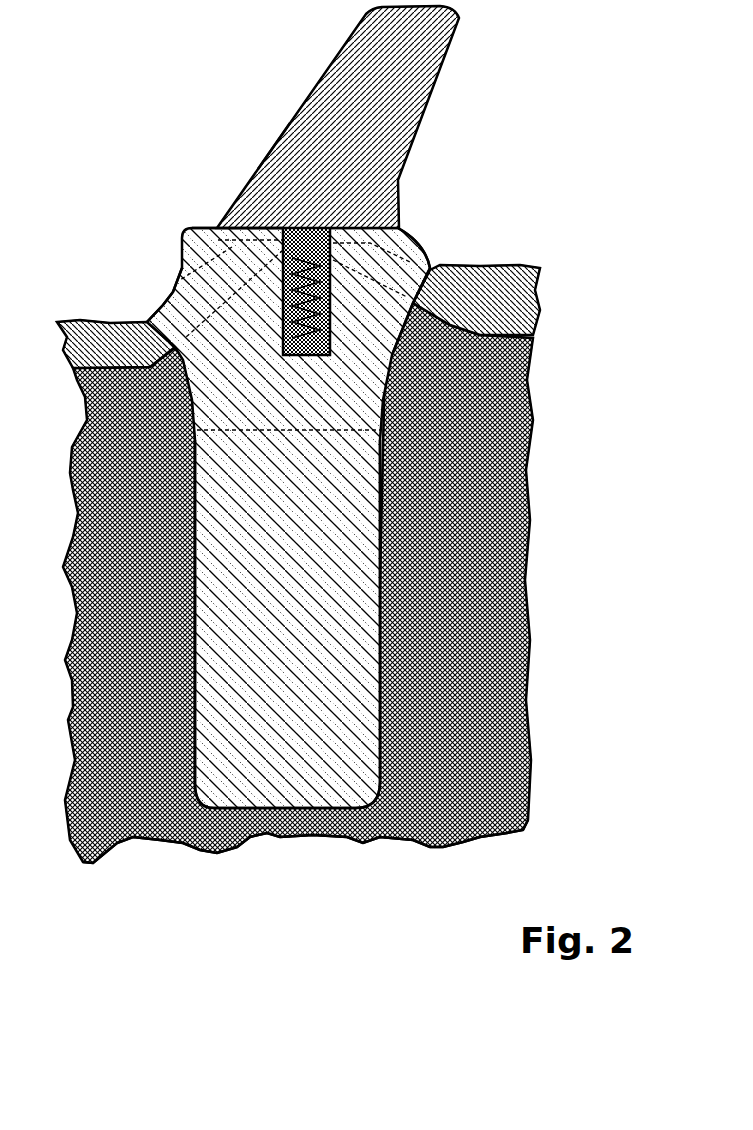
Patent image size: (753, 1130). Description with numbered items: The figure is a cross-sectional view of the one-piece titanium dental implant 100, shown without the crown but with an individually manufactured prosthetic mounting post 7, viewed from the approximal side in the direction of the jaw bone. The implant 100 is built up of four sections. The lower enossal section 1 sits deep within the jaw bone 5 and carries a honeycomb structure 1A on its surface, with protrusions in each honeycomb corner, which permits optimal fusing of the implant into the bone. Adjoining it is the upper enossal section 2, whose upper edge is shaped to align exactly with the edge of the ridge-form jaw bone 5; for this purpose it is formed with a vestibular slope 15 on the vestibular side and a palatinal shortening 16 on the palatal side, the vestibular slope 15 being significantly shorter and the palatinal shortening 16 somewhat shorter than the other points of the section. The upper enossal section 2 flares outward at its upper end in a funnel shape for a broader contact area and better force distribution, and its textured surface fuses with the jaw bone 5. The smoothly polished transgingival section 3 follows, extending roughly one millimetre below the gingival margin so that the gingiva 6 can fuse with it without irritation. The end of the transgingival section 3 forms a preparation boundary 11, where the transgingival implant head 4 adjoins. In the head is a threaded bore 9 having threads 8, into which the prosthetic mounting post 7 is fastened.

The dental implant 100 is at (510, 144).
The lower enossal section 1 is at (357, 843).
The honeycomb structure 1A is at (193, 777).
The upper enossal section 2 is at (345, 408).
The transgingival section 3 is at (420, 250).
The transgingival implant head 4 is at (405, 238).
The jaw bone 5 is at (520, 527).
The gingiva 6 is at (535, 300).
The prosthetic mounting post 7 is at (435, 93).
The threads 8 is at (270, 150).
The threaded bore 9 is at (217, 229).
The preparation boundary 11 is at (140, 317).
The vestibular slope 15 is at (173, 283).
The palatinal shortening 16 is at (432, 270).